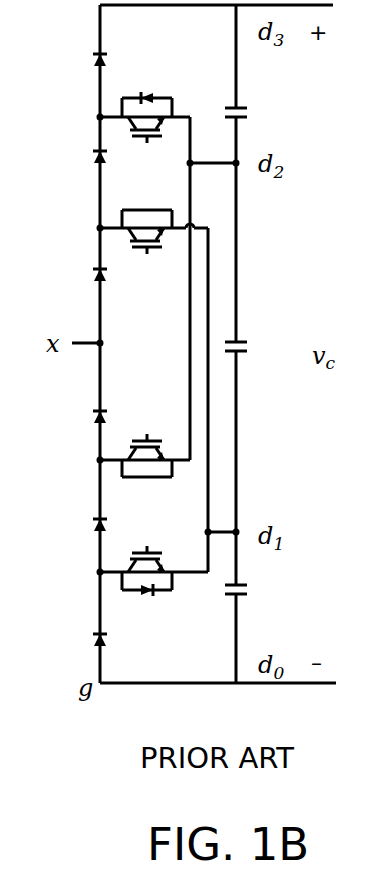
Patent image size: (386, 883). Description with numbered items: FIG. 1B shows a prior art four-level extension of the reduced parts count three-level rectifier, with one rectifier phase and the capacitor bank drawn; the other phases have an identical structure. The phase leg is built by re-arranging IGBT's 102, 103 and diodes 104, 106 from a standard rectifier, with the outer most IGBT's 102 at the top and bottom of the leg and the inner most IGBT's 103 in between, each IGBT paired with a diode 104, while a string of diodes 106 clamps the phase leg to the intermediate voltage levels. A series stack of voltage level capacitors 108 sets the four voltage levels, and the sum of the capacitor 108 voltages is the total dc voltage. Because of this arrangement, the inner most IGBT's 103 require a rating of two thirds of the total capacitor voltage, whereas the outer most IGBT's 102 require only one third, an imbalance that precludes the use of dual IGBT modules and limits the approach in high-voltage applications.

The outer most IGBT 102 is at (130, 141).
The inner most IGBT 103 is at (157, 262).
The diode 104 is at (145, 94).
The diode 106 is at (86, 272).
The voltage level capacitor 108 is at (252, 115).